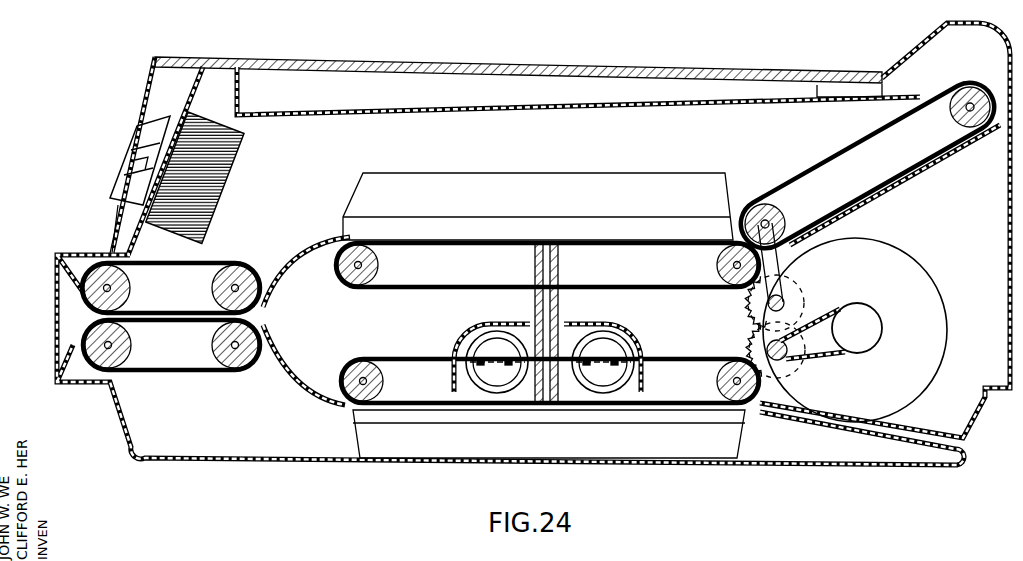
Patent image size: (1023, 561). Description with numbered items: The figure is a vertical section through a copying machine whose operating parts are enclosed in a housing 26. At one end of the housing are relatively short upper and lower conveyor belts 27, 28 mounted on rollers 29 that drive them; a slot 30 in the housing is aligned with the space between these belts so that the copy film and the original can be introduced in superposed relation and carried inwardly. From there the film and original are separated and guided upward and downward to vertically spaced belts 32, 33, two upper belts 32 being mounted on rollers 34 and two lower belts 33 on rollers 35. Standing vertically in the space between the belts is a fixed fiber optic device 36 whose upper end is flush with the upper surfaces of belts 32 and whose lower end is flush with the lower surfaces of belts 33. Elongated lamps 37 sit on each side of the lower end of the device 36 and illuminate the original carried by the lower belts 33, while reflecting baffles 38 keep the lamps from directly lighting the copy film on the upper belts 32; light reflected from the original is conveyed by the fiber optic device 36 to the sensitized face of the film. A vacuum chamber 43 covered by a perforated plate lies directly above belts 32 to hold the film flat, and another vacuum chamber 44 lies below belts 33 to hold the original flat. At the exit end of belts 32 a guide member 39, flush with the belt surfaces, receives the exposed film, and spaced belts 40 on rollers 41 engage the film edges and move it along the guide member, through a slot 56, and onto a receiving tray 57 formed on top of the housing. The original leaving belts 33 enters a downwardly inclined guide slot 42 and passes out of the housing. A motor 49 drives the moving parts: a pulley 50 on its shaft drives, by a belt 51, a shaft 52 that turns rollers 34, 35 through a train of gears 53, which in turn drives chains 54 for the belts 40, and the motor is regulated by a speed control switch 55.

The housing 26 is at (276, 465).
The upper conveyor belt 27 is at (213, 291).
The lower conveyor belt 28 is at (194, 378).
The rollers 29 is at (126, 292).
The slot 30 is at (85, 316).
The upper belts 32 is at (436, 289).
The lower belts 33 is at (352, 362).
The rollers 34 is at (717, 267).
The rollers 35 is at (384, 367).
The fiber optic device 36 is at (536, 295).
The elongated lamps 37 is at (490, 380).
The reflecting baffles 38 is at (466, 332).
The guide member 39 is at (953, 162).
The spaced belts 40 is at (829, 162).
The rollers 41 is at (960, 119).
The guide slot 42 is at (848, 428).
The vacuum chamber 43 is at (554, 173).
The vacuum chamber 44 is at (710, 458).
The motor 49 is at (938, 357).
The pulley 50 is at (878, 329).
The belt 51 is at (830, 357).
The shaft 52 is at (790, 357).
The train of gears 53 is at (810, 302).
The chains 54 is at (786, 272).
The speed control switch 55 is at (228, 118).
The slot 56 is at (927, 44).
The receiving tray 57 is at (434, 104).